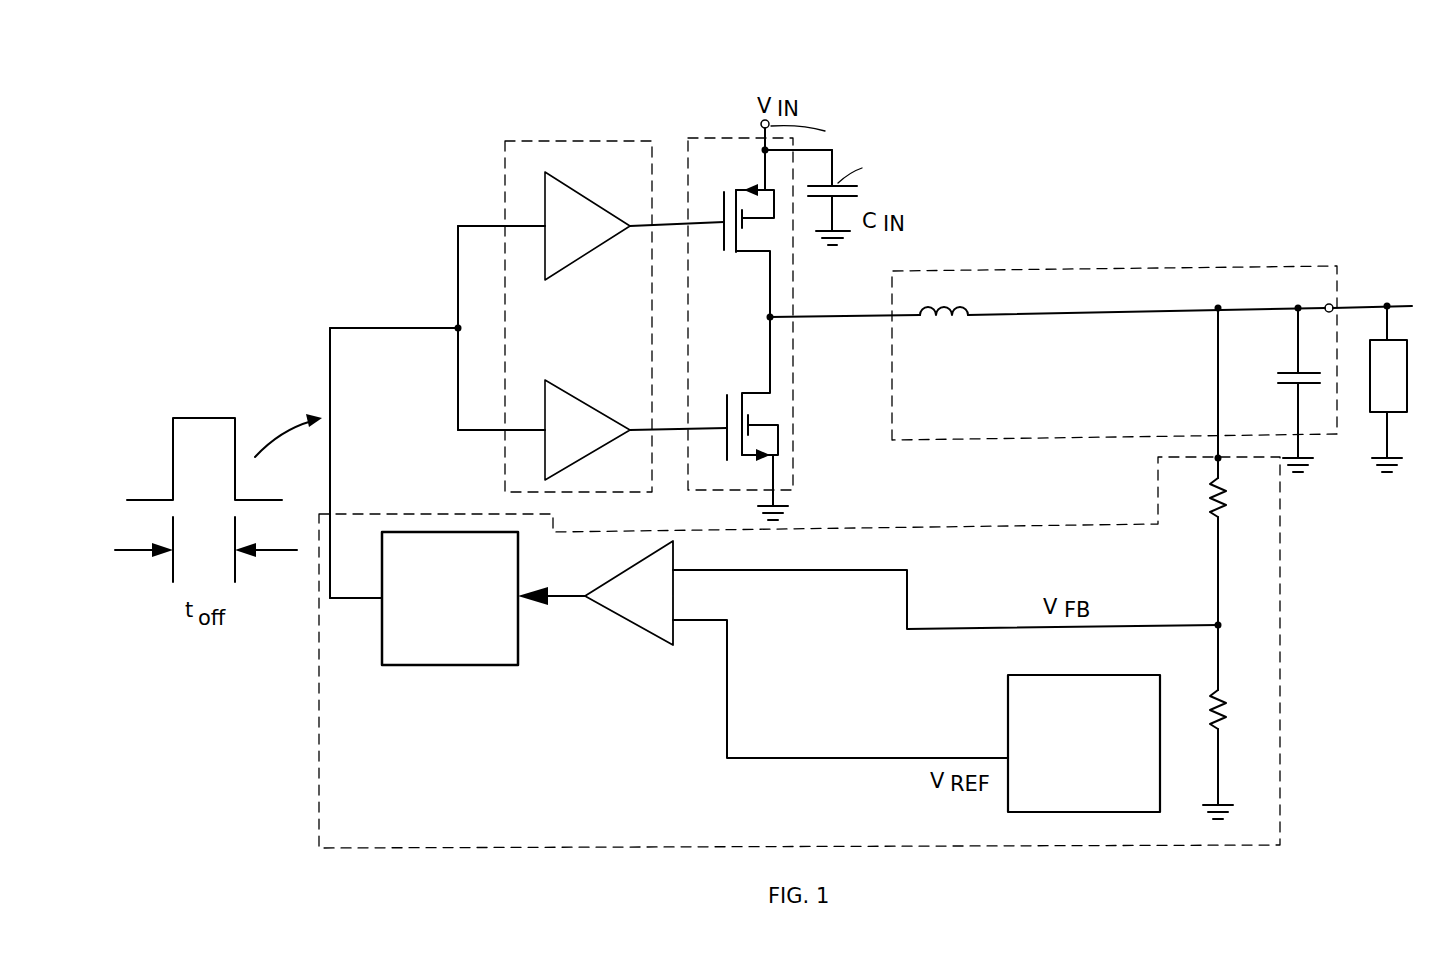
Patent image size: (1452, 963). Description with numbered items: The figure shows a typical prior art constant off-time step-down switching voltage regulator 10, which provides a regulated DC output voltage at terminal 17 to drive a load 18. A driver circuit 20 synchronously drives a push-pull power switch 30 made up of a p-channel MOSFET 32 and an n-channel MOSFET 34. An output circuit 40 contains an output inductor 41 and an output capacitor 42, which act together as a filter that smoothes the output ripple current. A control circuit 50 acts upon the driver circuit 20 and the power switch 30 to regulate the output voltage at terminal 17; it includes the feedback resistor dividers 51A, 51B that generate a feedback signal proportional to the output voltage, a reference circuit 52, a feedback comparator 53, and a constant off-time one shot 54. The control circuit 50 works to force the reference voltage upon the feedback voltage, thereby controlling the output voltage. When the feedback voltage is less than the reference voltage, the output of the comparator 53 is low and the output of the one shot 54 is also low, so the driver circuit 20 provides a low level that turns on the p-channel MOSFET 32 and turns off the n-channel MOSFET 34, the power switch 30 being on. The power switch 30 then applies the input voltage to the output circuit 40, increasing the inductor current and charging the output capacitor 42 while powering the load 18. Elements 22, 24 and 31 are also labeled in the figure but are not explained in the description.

The regulator 10 is at (520, 110).
The driver circuit 20 is at (545, 141).
The P-channel driver 22 is at (570, 265).
The N-channel driver 24 is at (590, 405).
The push-pull power switch 30 is at (730, 138).
The switch node 31 is at (848, 322).
The p-channel MOSFET 32 is at (754, 256).
The n-channel MOSFET 34 is at (749, 457).
The output circuit 40 is at (1063, 271).
The output inductor 41 is at (970, 306).
The output capacitor 42 is at (1290, 368).
The terminal 17 is at (1331, 302).
The load 18 is at (1366, 409).
The control circuit 50 is at (1283, 655).
The feedback resistor divider 51A is at (1220, 517).
The feedback resistor divider 51B is at (1222, 729).
The reference circuit 52 is at (1108, 648).
The feedback comparator 53 is at (643, 628).
The constant off-time one shot 54 is at (462, 667).